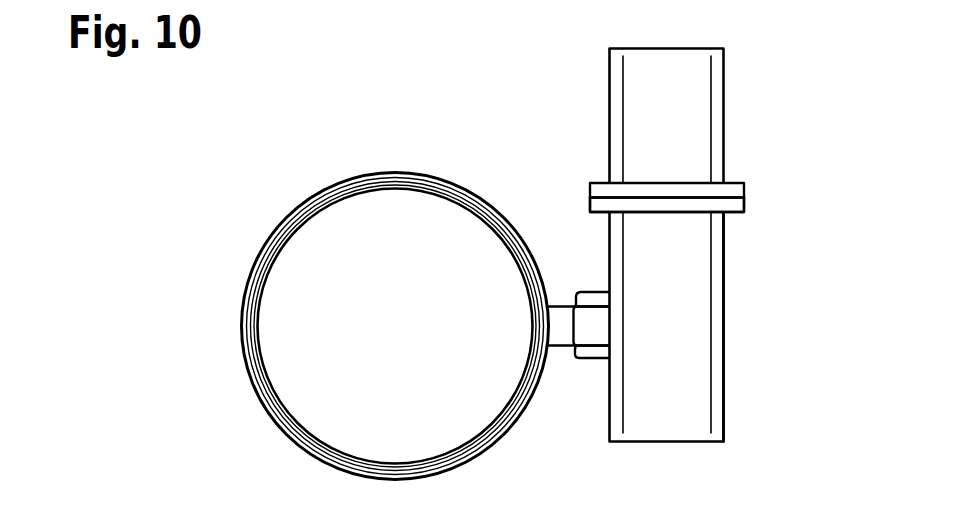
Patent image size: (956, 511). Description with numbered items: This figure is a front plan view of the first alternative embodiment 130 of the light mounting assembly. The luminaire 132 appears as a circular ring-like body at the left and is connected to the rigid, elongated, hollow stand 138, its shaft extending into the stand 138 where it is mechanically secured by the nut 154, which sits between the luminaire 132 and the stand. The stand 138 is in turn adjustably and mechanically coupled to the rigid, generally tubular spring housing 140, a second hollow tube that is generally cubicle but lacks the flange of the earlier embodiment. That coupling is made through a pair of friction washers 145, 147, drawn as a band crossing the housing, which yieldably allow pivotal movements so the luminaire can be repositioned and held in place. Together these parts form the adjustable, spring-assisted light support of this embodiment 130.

The first alternative embodiment 130 is at (408, 120).
The luminaire 132 is at (265, 224).
The stand 138 is at (742, 337).
The spring housing 140 is at (598, 75).
The friction washer 145 is at (598, 188).
The friction washer 147 is at (738, 204).
The nut 154 is at (597, 352).